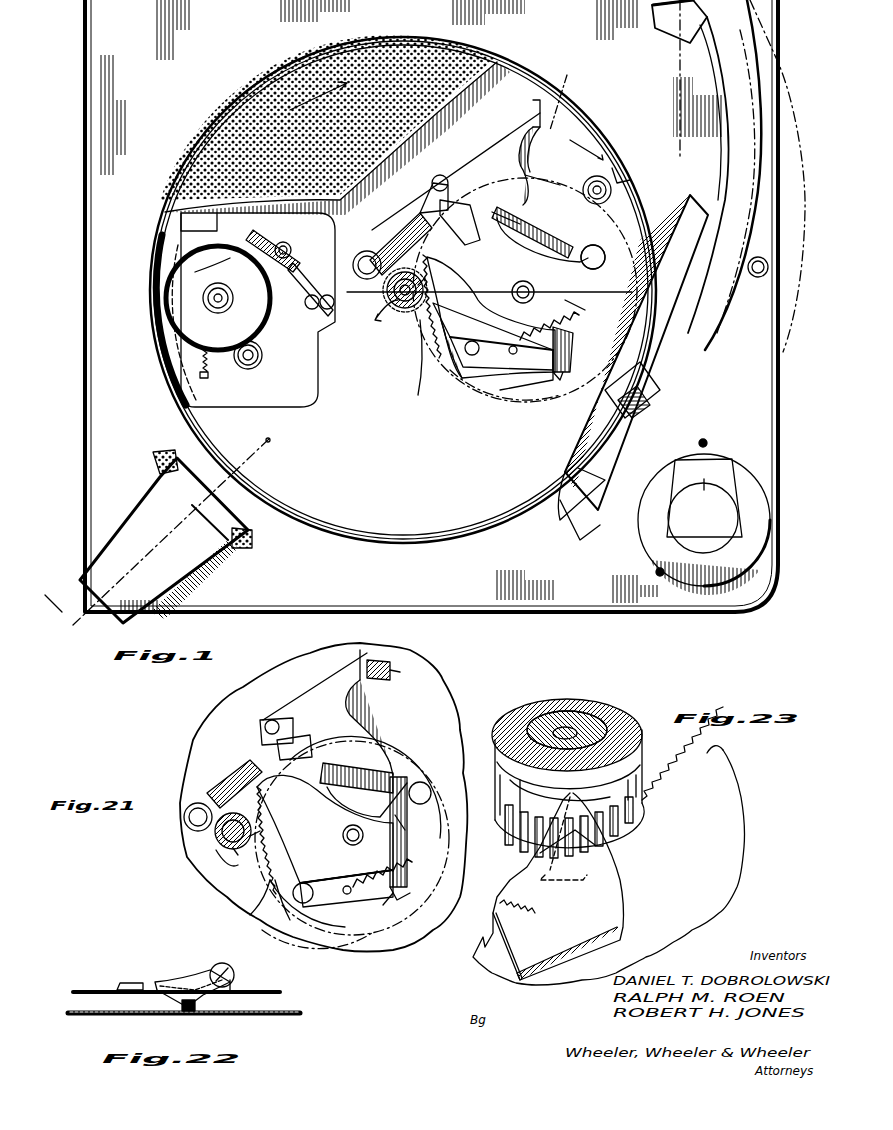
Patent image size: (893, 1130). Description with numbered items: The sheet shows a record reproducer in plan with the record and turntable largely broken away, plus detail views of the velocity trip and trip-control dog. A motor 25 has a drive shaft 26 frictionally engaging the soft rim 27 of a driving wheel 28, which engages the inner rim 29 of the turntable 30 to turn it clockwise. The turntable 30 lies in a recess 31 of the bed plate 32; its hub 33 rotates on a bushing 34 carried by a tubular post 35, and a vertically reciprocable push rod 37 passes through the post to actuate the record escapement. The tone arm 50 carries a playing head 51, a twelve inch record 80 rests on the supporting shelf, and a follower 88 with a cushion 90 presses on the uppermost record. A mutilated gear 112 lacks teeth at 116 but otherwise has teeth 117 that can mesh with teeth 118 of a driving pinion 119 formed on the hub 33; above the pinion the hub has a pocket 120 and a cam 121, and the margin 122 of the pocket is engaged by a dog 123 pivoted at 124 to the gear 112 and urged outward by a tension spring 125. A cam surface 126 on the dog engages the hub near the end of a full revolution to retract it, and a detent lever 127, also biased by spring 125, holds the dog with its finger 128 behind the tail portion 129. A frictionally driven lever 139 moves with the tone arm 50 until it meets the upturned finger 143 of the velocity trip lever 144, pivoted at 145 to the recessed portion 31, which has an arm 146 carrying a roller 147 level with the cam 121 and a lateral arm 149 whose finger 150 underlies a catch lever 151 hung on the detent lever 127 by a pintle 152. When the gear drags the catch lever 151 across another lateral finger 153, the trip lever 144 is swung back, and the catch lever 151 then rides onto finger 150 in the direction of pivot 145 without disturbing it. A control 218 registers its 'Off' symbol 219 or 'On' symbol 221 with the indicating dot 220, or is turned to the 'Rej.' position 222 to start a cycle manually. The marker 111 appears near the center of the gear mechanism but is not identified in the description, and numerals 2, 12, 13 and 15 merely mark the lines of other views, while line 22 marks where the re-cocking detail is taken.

In FIG. 1, the sliding cover member 2 is at (680, 157).
In FIG. 1, the shaft 12 is at (350, 322).
In FIG. 1, the section line 13 is at (53, 594).
In FIG. 1, the section line 15 is at (265, 440).
In FIG. 1, the section line 22— 22 is at (495, 195).
In FIG. 1, the motor 25 is at (290, 378).
In FIG. 1, the drive shaft 26 is at (256, 350).
In FIG. 1, the soft rim 27 is at (238, 316).
In FIG. 1, the driving wheel 28 is at (250, 330).
In FIG. 1, the inner rim 29 is at (160, 260).
In FIG. 1, the turntable 30 is at (195, 162).
In FIG. 1, the recess 31 is at (362, 534).
In FIG. 1, the bed plate 32 is at (418, 572).
In FIG. 22, the bed plate 32 is at (300, 1010).
In FIG. 1, the hub 33 is at (408, 308).
In FIG. 21, the hub 33 is at (216, 835).
In FIG. 23, the hub 33 is at (575, 700).
In FIG. 1, the bushing 34 is at (415, 312).
In FIG. 23, the bushing 34 is at (540, 698).
In FIG. 1, the tubular post 35 is at (420, 318).
In FIG. 23, the tubular post 35 is at (552, 728).
In FIG. 1, the push rod 37 is at (385, 314).
In FIG. 23, the push rod 37 is at (498, 742).
In FIG. 1, the tone arm 50 is at (690, 334).
In FIG. 1, the playing head 51 is at (650, 378).
In FIG. 1, the twelve inch record 80 is at (562, 520).
In FIG. 1, the follower 88 is at (178, 545).
In FIG. 1, the cushion 90 is at (158, 470).
In FIG. 1, the pivot pin 111 is at (512, 295).
In FIG. 21, the pivot pin 111 is at (343, 832).
In FIG. 1, the mutilated gear 112 is at (516, 413).
In FIG. 21, the mutilated gear 112 is at (290, 925).
In FIG. 22, the mutilated gear 112 is at (280, 990).
In FIG. 23, the mutilated gear 112 is at (725, 805).
In FIG. 1, the toothless portion 116 is at (460, 265).
In FIG. 21, the toothless portion 116 is at (270, 843).
In FIG. 23, the toothless portion 116 is at (558, 886).
In FIG. 1, the gear teeth 117 is at (452, 370).
In FIG. 21, the gear teeth 117 is at (280, 905).
In FIG. 23, the gear teeth 117 is at (723, 750).
In FIG. 21, the pinion teeth 118 is at (229, 866).
In FIG. 23, the pinion teeth 118 is at (520, 850).
In FIG. 23, the driving pinion 119 is at (648, 765).
In FIG. 21, the pocket 120 is at (218, 864).
In FIG. 23, the pocket 120 is at (520, 790).
In FIG. 1, the cam 121 is at (380, 296).
In FIG. 21, the cam 121 is at (240, 813).
In FIG. 23, the cam 121 is at (625, 700).
In FIG. 1, the margin 122 is at (412, 280).
In FIG. 21, the margin 122 is at (258, 830).
In FIG. 23, the margin 122 is at (575, 796).
In FIG. 1, the dog 123 is at (455, 313).
In FIG. 21, the dog 123 is at (290, 870).
In FIG. 23, the dog 123 is at (600, 850).
In FIG. 1, the pivotal connection 124 is at (470, 342).
In FIG. 21, the pivotal connection 124 is at (306, 884).
In FIG. 1, the tension spring 125 is at (555, 308).
In FIG. 21, the tension spring 125 is at (380, 860).
In FIG. 1, the cam surface 126 is at (414, 366).
In FIG. 21, the cam surface 126 is at (237, 902).
In FIG. 1, the detent lever 127 is at (598, 300).
In FIG. 21, the detent lever 127 is at (410, 830).
In FIG. 22, the detent lever 127 is at (115, 985).
In FIG. 1, the finger 128 is at (572, 345).
In FIG. 21, the finger 128 is at (428, 876).
In FIG. 1, the tail portion 129 is at (552, 395).
In FIG. 21, the tail portion 129 is at (381, 910).
In FIG. 1, the frictionally driven lever 139 is at (645, 178).
In FIG. 21, the frictionally driven lever 139 is at (405, 664).
In FIG. 1, the upturned finger 143 is at (538, 112).
In FIG. 21, the upturned finger 143 is at (362, 648).
In FIG. 1, the velocity trip lever 144 is at (505, 135).
In FIG. 21, the velocity trip lever 144 is at (345, 680).
In FIG. 1, the pivot 145 is at (440, 170).
In FIG. 21, the pivot 145 is at (275, 718).
In FIG. 1, the arm 146 is at (395, 240).
In FIG. 21, the arm 146 is at (228, 782).
In FIG. 1, the roller 147 is at (360, 250).
In FIG. 21, the roller 147 is at (184, 815).
In FIG. 1, the lateral arm 149 is at (535, 175).
In FIG. 21, the lateral arm 149 is at (365, 700).
In FIG. 1, the finger 150 is at (550, 177).
In FIG. 21, the finger 150 is at (400, 722).
In FIG. 22, the finger 150 is at (185, 1017).
In FIG. 1, the catch lever 151 is at (560, 225).
In FIG. 21, the catch lever 151 is at (348, 812).
In FIG. 22, the catch lever 151 is at (190, 965).
In FIG. 1, the pintle 152 is at (532, 225).
In FIG. 21, the pintle 152 is at (330, 790).
In FIG. 22, the pintle 152 is at (231, 966).
In FIG. 1, the lateral finger 153 is at (460, 222).
In FIG. 21, the lateral finger 153 is at (294, 744).
In FIG. 1, the control 218 is at (720, 525).
In FIG. 1, the Off symbol 219 is at (732, 480).
In FIG. 1, the indicating dot 220 is at (690, 452).
In FIG. 1, the On symbol 221 is at (706, 476).
In FIG. 1, the Rej. position 222 is at (677, 500).